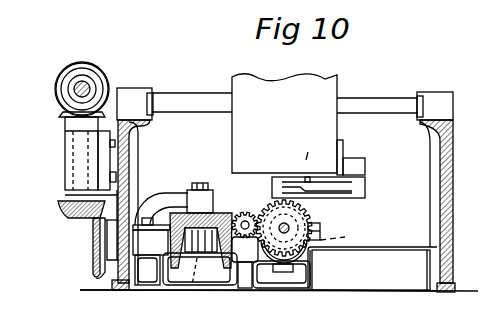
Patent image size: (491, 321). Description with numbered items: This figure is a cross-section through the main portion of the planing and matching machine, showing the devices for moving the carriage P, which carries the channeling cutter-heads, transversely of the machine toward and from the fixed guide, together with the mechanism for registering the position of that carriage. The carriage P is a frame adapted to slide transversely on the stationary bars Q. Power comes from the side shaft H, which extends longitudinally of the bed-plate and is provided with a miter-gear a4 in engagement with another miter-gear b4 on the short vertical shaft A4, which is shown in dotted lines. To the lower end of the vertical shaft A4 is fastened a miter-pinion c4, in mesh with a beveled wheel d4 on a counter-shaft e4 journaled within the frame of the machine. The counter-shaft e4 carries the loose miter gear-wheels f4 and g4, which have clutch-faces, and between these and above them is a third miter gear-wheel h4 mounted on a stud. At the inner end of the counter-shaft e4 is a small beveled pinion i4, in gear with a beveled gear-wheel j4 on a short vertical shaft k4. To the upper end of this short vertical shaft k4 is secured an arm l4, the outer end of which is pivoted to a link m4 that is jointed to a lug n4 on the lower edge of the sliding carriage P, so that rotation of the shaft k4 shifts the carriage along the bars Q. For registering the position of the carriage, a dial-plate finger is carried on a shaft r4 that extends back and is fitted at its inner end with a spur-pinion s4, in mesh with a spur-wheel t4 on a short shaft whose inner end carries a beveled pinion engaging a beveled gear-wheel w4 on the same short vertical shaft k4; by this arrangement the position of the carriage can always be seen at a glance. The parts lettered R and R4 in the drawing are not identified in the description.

The side shaft H is at (56, 79).
The miter-gear a4 is at (110, 58).
The miter-gear b4 is at (62, 117).
The vertical shaft A4 is at (66, 175).
The miter-pinion c4 is at (62, 213).
The beveled wheel d4 is at (92, 270).
The frame R is at (140, 170).
The base R4 is at (166, 294).
The stationary bars Q is at (374, 100).
The carriage P is at (284, 123).
The beveled gear-wheel w4 is at (351, 186).
The lug n4 is at (366, 171).
The link m4 is at (353, 205).
The third miter gear-wheel h4 is at (210, 208).
The counter-shaft e4 is at (220, 266).
The loose miter gear-wheel f4 is at (184, 258).
The loose miter gear-wheel g4 is at (222, 285).
The shaft r4 is at (245, 212).
The spur-pinion s4 is at (245, 262).
The arm l4 is at (315, 207).
The small beveled pinion i4 is at (266, 283).
The spur-wheel t4 is at (345, 265).
The beveled gear-wheel j4 is at (313, 258).
The short vertical shaft k4 is at (322, 297).